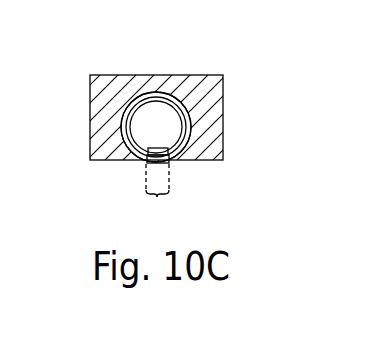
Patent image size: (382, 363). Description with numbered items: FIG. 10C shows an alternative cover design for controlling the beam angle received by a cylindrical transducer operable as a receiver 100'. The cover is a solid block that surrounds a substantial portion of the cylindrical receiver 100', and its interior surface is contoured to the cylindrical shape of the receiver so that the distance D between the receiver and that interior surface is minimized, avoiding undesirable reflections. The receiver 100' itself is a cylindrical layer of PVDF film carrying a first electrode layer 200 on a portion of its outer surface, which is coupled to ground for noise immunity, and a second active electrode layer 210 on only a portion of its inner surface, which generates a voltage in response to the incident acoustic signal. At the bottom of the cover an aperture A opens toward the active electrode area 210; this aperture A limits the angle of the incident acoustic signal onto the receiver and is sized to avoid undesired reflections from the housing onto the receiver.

The receiver 100' is at (111, 88).
The distance D is at (147, 95).
The second active electrode layer 210 is at (158, 148).
The first electrode layer 200 is at (156, 163).
The aperture A is at (157, 193).